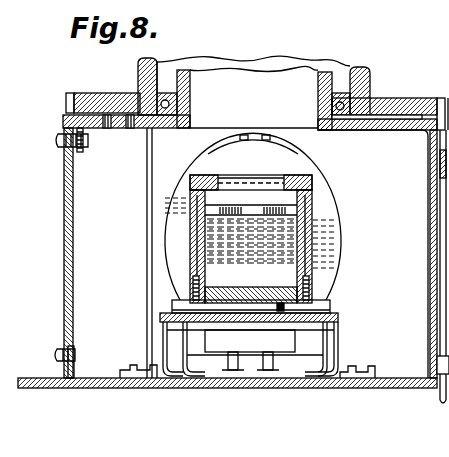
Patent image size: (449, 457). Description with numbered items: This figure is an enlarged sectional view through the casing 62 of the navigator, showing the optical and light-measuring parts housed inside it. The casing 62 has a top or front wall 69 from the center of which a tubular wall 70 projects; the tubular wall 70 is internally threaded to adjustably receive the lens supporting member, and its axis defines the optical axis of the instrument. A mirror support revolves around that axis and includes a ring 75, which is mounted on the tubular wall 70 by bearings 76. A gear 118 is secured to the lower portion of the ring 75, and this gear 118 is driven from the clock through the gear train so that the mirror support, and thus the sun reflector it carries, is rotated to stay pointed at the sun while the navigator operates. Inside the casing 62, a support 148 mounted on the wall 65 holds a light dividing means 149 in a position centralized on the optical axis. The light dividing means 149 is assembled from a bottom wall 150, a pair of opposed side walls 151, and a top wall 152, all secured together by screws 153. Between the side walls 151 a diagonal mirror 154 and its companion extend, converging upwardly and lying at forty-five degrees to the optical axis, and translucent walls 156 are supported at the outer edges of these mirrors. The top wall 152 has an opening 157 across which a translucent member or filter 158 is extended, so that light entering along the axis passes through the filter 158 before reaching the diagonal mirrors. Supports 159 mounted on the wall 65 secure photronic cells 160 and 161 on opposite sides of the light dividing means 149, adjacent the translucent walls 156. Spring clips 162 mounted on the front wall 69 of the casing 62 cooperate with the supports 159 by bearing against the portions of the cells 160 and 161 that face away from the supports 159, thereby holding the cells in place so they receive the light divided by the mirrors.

The casing 62 is at (428, 240).
The wall 65 is at (398, 389).
The top or front wall 69 is at (171, 130).
The tubular wall 70 is at (191, 85).
The ring 75 is at (141, 63).
The bearings 76 is at (178, 101).
The gear 118 is at (402, 99).
The support 148 is at (310, 323).
The light dividing means 149 is at (316, 211).
The bottom wall 150 is at (265, 287).
The side walls 151 is at (194, 238).
The top wall 152 is at (308, 196).
The screws 153 is at (191, 194).
The diagonal mirror 154 is at (212, 217).
The translucent walls 156 is at (311, 298).
The opening 157 is at (265, 183).
The translucent member or filter 158 is at (232, 176).
The supports 159 is at (326, 346).
The photronic cell 160 is at (331, 236).
The photronic cell 161 is at (314, 223).
The spring clips 162 is at (276, 143).